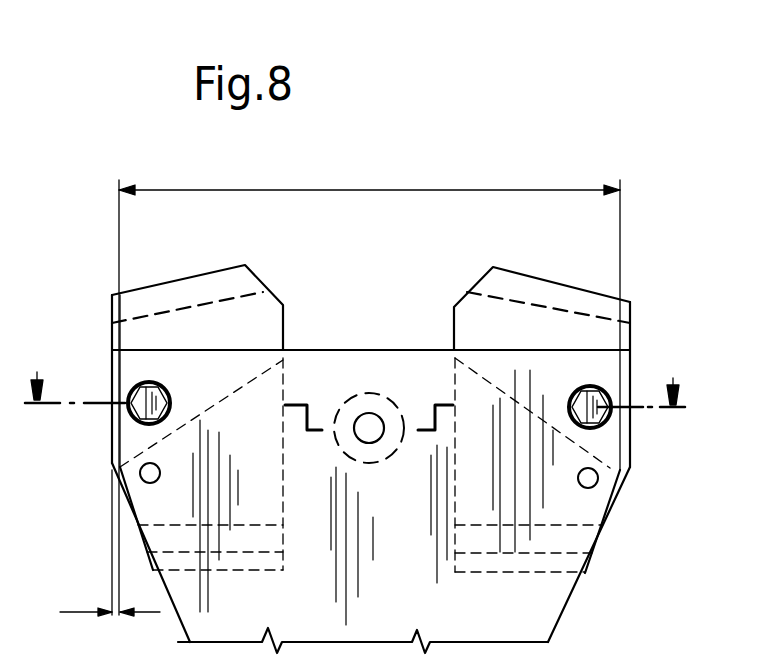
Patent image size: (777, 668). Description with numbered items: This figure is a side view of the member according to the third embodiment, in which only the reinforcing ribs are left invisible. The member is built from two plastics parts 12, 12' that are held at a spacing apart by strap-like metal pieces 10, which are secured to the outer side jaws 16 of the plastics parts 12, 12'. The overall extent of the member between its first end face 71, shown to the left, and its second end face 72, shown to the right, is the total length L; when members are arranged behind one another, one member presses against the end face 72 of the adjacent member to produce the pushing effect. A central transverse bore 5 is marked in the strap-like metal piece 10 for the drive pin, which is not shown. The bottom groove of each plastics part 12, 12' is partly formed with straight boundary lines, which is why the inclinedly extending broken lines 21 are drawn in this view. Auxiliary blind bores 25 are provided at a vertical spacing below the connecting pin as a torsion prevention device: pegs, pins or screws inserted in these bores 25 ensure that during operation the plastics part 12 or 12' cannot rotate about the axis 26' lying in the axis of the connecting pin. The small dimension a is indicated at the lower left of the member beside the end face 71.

The strap-like metal piece 10 is at (543, 607).
The first end face 71 is at (110, 337).
The second end face 72 is at (633, 337).
The plastics part 12' is at (187, 264).
The plastics part 12 is at (545, 260).
The outer side jaw 16 is at (258, 335).
The inclinedly extending broken lines 21 is at (577, 446).
The central transverse bore 5 is at (365, 413).
The axis 26' is at (355, 418).
The auxiliary blind bore 25 is at (140, 479).
The total length L is at (369, 381).
The wall thickness a is at (112, 606).